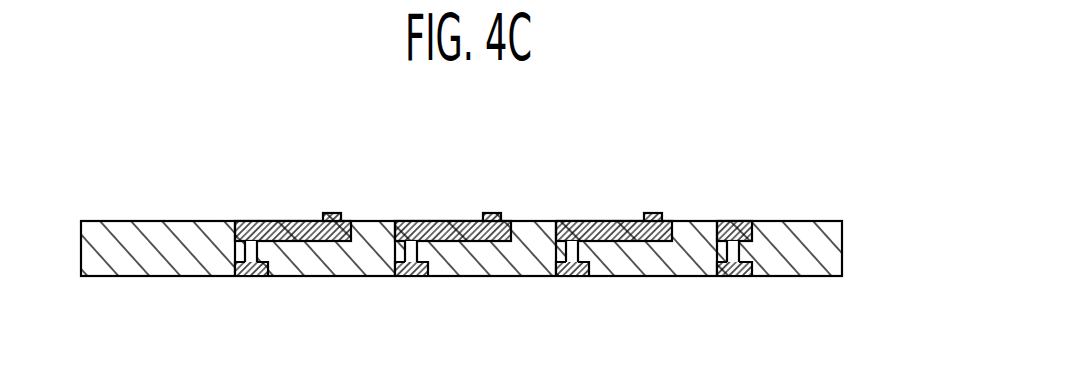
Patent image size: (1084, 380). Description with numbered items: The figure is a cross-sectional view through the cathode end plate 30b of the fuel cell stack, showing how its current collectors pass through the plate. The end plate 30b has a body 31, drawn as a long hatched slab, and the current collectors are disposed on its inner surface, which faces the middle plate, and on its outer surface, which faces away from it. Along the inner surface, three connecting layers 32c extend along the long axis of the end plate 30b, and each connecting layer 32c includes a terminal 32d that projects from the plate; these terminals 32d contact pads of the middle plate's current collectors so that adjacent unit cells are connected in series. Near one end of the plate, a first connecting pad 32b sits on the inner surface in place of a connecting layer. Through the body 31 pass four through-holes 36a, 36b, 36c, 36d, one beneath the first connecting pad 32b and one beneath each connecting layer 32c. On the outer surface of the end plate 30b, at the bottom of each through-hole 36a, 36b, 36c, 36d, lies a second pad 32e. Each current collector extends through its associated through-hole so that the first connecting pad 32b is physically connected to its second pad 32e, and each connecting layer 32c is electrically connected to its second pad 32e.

The end plate 30b is at (860, 203).
The body 31 is at (803, 222).
The first connecting pad 32b is at (738, 220).
The connecting layer 32c is at (283, 223).
The terminal 32d is at (330, 215).
The second pad 32e is at (241, 273).
The through-hole 36a is at (745, 252).
The through-hole 36b is at (583, 252).
The through-hole 36c is at (422, 252).
The through-hole 36d is at (262, 252).